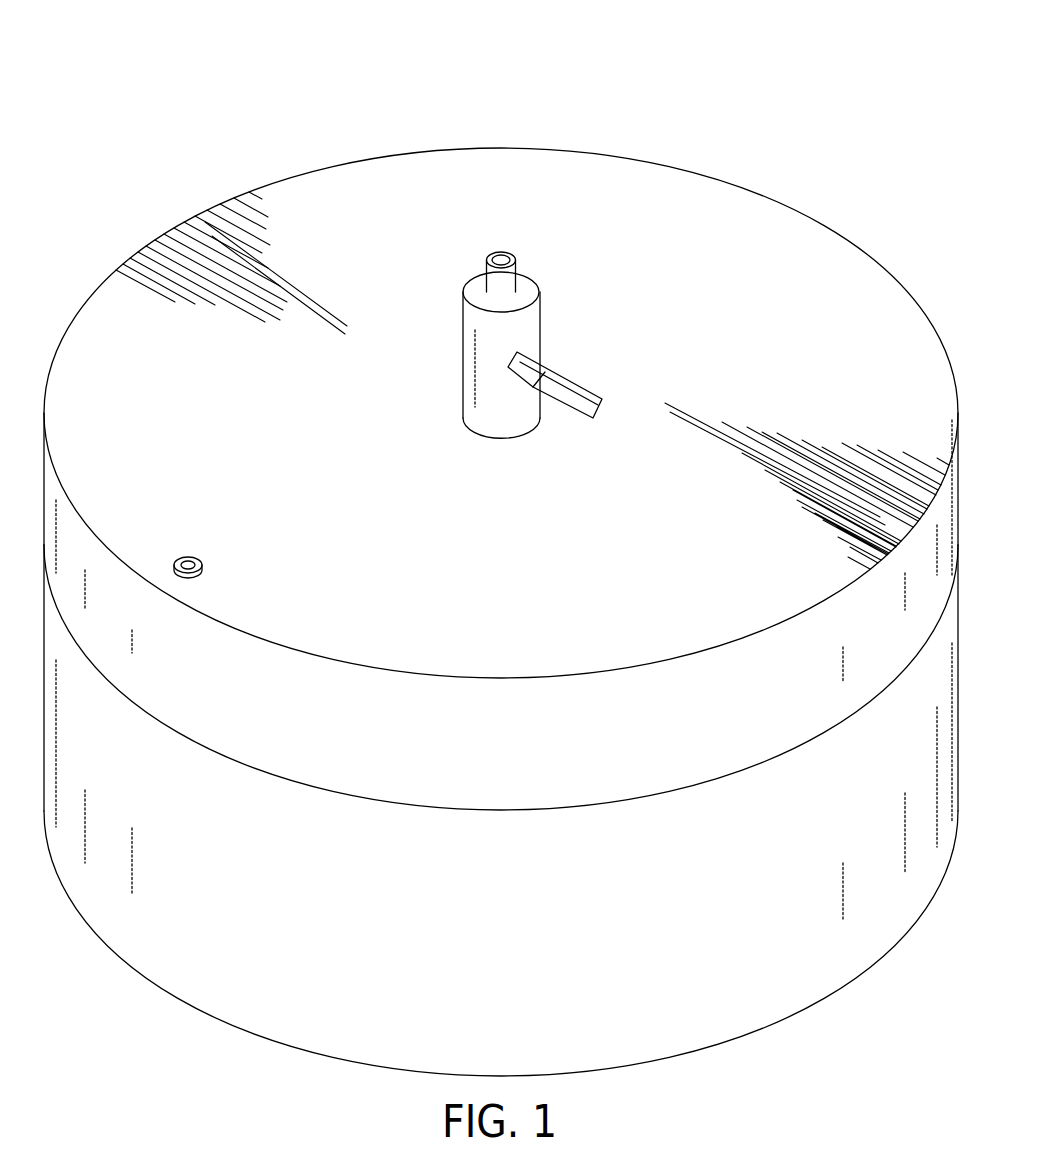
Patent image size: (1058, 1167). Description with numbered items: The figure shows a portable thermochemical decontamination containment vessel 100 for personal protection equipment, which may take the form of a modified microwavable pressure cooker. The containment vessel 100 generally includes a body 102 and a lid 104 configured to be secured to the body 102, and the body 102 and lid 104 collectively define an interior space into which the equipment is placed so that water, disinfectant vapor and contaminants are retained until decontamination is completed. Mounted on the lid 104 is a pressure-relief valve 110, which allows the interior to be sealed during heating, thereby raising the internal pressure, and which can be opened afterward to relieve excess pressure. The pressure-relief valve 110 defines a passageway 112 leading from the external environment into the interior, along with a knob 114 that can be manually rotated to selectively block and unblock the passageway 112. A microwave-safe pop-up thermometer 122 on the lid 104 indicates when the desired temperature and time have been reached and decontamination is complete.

The portable thermochemical decontamination containment vessel 100 is at (708, 70).
The body 102 is at (741, 1038).
The lid 104 is at (817, 222).
The pressure-relief valve 110 is at (457, 341).
The passageway 112 is at (501, 256).
The knob 114 is at (570, 376).
The pop-up thermometer 122 is at (186, 557).